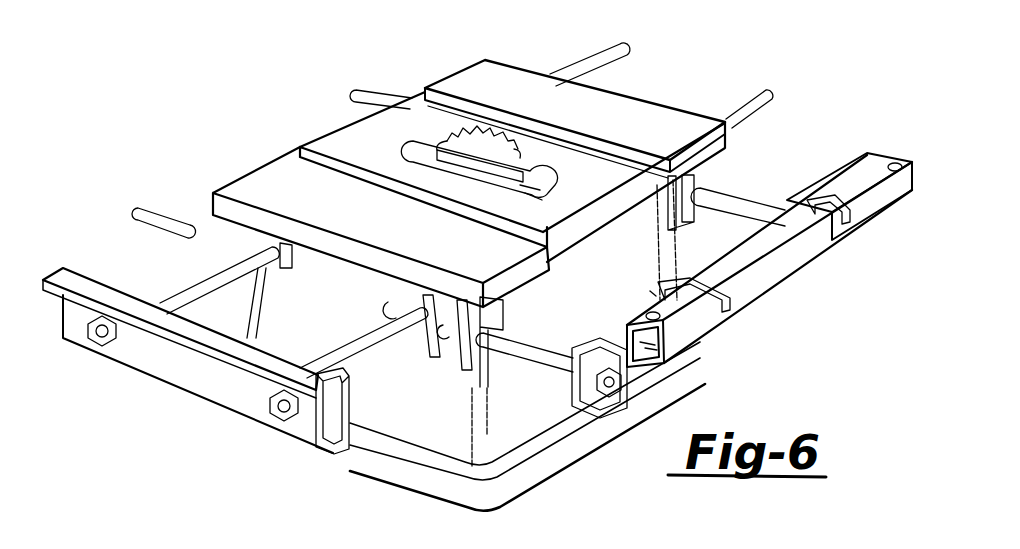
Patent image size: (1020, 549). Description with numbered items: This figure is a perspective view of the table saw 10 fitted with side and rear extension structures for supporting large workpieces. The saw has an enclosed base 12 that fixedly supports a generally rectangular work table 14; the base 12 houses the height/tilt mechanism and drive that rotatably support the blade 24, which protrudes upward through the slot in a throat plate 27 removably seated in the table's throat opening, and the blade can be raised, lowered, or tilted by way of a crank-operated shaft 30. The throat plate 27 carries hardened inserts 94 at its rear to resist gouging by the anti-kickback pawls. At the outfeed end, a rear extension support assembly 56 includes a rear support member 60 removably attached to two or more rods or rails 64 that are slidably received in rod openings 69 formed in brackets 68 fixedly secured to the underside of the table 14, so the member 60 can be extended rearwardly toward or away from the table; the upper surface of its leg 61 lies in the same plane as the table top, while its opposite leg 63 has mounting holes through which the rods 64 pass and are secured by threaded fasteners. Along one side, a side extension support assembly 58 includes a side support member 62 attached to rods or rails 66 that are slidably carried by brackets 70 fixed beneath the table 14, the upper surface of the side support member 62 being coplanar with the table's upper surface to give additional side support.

The table saw 10 is at (602, 106).
The enclosed base 12 is at (418, 440).
The work table 14 is at (680, 138).
The blade 24 is at (538, 150).
The throat plate 27 is at (428, 153).
The shaft 30 is at (225, 237).
The rear extension support assembly 56 is at (868, 150).
The side extension support assembly 58 is at (105, 278).
The rear support member 60 is at (800, 270).
The leg 61 is at (655, 291).
The side support member 62 is at (253, 400).
The leg 63 is at (612, 420).
The rods or rails 64 is at (392, 92).
The rods or rails 66 is at (570, 72).
The brackets 68 is at (503, 302).
The rod openings 69 is at (510, 348).
The brackets 70 is at (288, 270).
The hardened inserts 94 is at (522, 192).